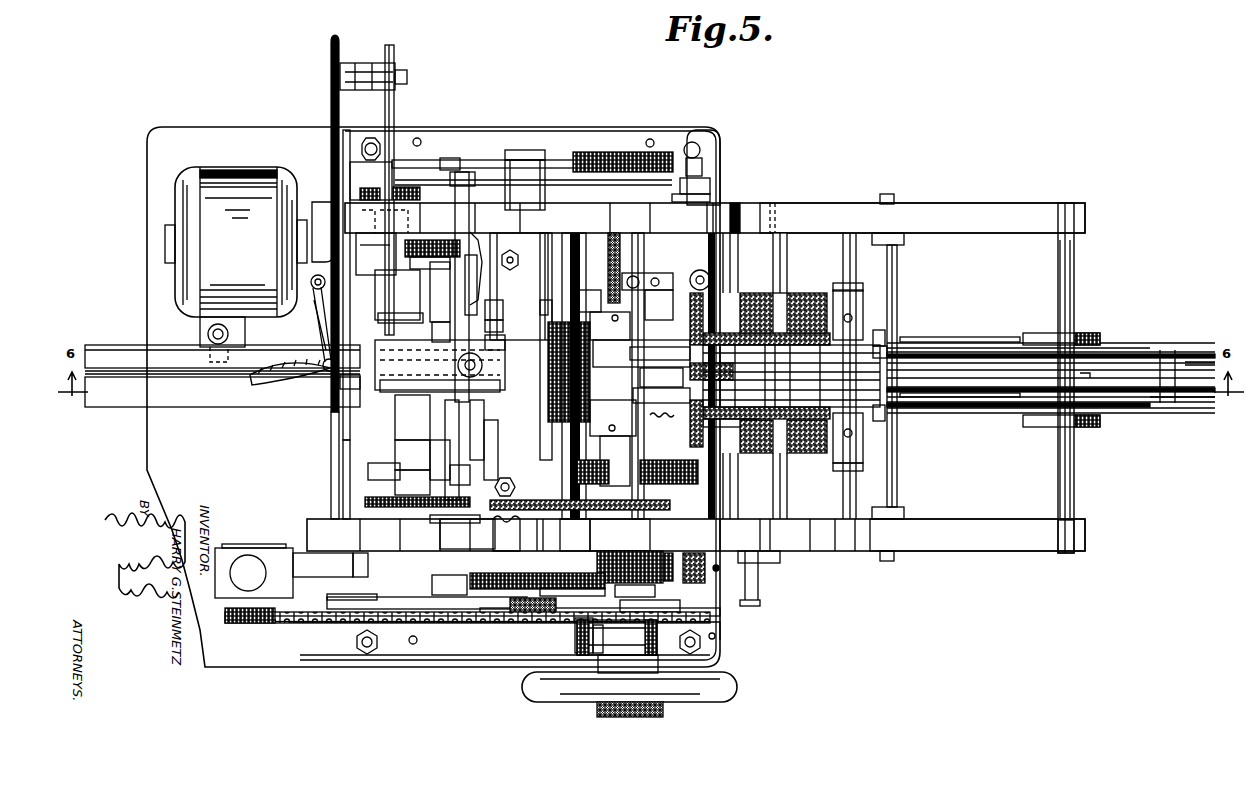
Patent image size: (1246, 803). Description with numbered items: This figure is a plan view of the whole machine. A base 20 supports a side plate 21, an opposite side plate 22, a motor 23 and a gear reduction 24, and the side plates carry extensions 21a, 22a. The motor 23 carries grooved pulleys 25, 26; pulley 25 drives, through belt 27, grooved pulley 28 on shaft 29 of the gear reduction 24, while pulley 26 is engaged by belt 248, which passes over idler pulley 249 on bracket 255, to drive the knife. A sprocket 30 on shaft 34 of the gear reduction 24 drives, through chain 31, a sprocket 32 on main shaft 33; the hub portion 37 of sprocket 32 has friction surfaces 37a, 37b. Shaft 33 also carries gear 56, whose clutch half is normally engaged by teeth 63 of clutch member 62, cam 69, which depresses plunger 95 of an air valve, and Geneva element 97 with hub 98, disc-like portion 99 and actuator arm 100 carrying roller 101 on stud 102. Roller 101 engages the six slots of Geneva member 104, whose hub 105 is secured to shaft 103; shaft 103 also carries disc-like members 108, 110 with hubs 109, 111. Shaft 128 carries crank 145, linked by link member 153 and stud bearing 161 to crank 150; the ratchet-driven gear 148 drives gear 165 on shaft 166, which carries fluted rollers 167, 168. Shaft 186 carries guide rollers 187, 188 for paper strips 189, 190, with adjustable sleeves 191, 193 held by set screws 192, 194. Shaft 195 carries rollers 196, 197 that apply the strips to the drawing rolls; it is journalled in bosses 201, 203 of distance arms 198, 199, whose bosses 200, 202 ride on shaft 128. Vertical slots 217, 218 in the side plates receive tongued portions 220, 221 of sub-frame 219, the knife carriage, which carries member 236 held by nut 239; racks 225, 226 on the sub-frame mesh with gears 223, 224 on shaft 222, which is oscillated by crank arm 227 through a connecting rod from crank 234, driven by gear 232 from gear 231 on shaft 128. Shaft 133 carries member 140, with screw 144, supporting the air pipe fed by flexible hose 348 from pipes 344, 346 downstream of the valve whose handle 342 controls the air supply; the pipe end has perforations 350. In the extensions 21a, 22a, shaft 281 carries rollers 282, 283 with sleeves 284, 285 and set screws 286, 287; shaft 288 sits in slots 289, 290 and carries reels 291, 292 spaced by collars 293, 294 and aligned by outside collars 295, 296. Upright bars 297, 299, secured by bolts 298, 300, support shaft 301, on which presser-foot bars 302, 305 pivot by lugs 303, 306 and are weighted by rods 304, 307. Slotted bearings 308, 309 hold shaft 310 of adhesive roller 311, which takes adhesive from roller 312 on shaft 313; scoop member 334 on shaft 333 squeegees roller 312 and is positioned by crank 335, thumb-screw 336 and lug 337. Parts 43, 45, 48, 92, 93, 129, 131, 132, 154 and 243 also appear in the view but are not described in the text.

The base 20 is at (210, 130).
The side plate 21 is at (340, 524).
The extension of side plate 21a is at (920, 553).
The side plate 22 is at (588, 208).
The extension of side plate 22a is at (930, 204).
The motor 23 is at (248, 167).
The gear reduction 24 is at (226, 548).
The grooved pulley 25 is at (373, 258).
The grooved pulley 26 is at (334, 205).
The belt 27 is at (343, 442).
The grooved pulley 28 is at (354, 560).
The shaft 29 is at (318, 578).
The sprocket 30 is at (262, 622).
The chain 31 is at (472, 625).
The sprocket 32 is at (682, 620).
The main shaft 33 is at (646, 262).
The shaft 34 is at (250, 598).
The hub portion 37 is at (583, 628).
The friction surface 37a is at (660, 598).
The friction surface 37b is at (598, 640).
The handwheel 43 is at (737, 690).
The worm gear 45 is at (617, 646).
The knob 48 is at (650, 720).
The gear 56 is at (682, 484).
The clutch member 62 is at (628, 397).
The teeth 63 is at (665, 418).
The cam 69 is at (652, 302).
The gear 92 is at (650, 582).
The cross member 93 is at (635, 522).
The plunger 95 is at (657, 280).
The Geneva movement element 97 is at (656, 156).
The hub 98 is at (578, 180).
The disc-like portion 99 is at (655, 158).
The actuator arm 100 is at (710, 188).
The roller 101 is at (704, 166).
The stud 102 is at (700, 135).
The shaft 103 is at (518, 152).
The Geneva member 104 is at (548, 153).
The hub 105 is at (545, 195).
The disc-like member 108 is at (440, 340).
The hub 109 is at (498, 322).
The disc-like member 110 is at (449, 420).
The hub 111 is at (488, 445).
The shaft 128 is at (388, 442).
The gear 129 is at (348, 496).
The bearing block 131 is at (548, 522).
The collar 132 is at (390, 325).
The shaft 133 is at (331, 420).
The support member 140 is at (342, 385).
The screw 144 is at (456, 362).
The crank 145 is at (330, 604).
The gear 148 is at (486, 572).
The crank 150 is at (455, 582).
The link member 153 is at (420, 597).
The bar 154 is at (328, 624).
The stud bearing 161 is at (516, 620).
The gear 165 is at (586, 594).
The shaft 166 is at (580, 268).
The fluted roller 167 is at (570, 478).
The fluted roller 168 is at (548, 298).
The shaft 186 is at (608, 248).
The roller 187 is at (632, 380).
The roller 188 is at (644, 348).
The paper strip 189 is at (712, 397).
The paper strip 190 is at (641, 353).
The sleeve portion 191 is at (626, 432).
The set screw 192 is at (612, 428).
The sleeve 193 is at (600, 326).
The set screw 194 is at (587, 301).
The shaft 195 is at (500, 306).
The roller 196 is at (478, 410).
The roller 197 is at (500, 345).
The distance arm 198 is at (400, 488).
The distance arm 199 is at (408, 288).
The bossed portion 200 is at (366, 475).
The bossed portion 201 is at (496, 484).
The boss 202 is at (375, 247).
The boss 203 is at (528, 242).
The vertical slot 217 is at (484, 535).
The vertical slot 218 is at (470, 230).
The sub-frame member 219 is at (438, 455).
The tongued portion 220 is at (465, 535).
The tongued portion 221 is at (470, 178).
The shaft 222 is at (430, 424).
The gear 223 is at (463, 474).
The gear 224 is at (440, 290).
The vertical rack 225 is at (455, 526).
The rack 226 is at (470, 280).
The crank arm 227 is at (460, 170).
The gear 231 is at (363, 188).
The gear 232 is at (407, 183).
The crank 234 is at (408, 142).
The member 236 is at (543, 280).
The nut 239 is at (440, 365).
The drum 243 is at (528, 410).
The belt 248 is at (331, 122).
The idler pulley 249 is at (342, 58).
The bracket 255 is at (392, 108).
The shaft 281 is at (843, 262).
The roller 282 is at (892, 420).
The roller 283 is at (892, 338).
The sleeve portion 284 is at (855, 433).
The sleeve portion 285 is at (855, 318).
The set screw 286 is at (850, 445).
The set screw 287 is at (868, 305).
The shaft 288 is at (1075, 288).
The slot 289 is at (1066, 556).
The slot 290 is at (1063, 203).
The reel 291 is at (1146, 412).
The reel 292 is at (1132, 344).
The washer or collar 293 is at (1105, 384).
The washer or collar 294 is at (1045, 384).
The outside collar 295 is at (1023, 428).
The outside collar 296 is at (1023, 338).
The upright bar 297 is at (904, 516).
The bolts 298 is at (876, 563).
The upright bar 299 is at (904, 246).
The bolts 300 is at (888, 194).
The shaft 301 is at (898, 272).
The presser-foot bar 302 is at (1122, 418).
The lug 303 is at (935, 416).
The rod 304 is at (1196, 414).
The presser-foot bar 305 is at (958, 343).
The lug 306 is at (890, 348).
The rod 307 is at (1176, 348).
The slotted bearing 308 is at (752, 212).
The slotted bearing 309 is at (738, 575).
The shaft 310 is at (752, 292).
The roller 311 is at (768, 295).
The roller 312 is at (815, 475).
The shaft 313 is at (775, 478).
The shaft 333 is at (708, 508).
The scoop member 334 is at (738, 452).
The crank 335 is at (690, 553).
The thumb-screw 336 is at (662, 553).
The lug 337 is at (714, 558).
The handle 342 is at (698, 270).
The horizontal pipe 344 is at (320, 305).
The horizontal pipe 346 is at (323, 332).
The flexible hose 348 is at (262, 378).
The perforations 350 is at (455, 386).